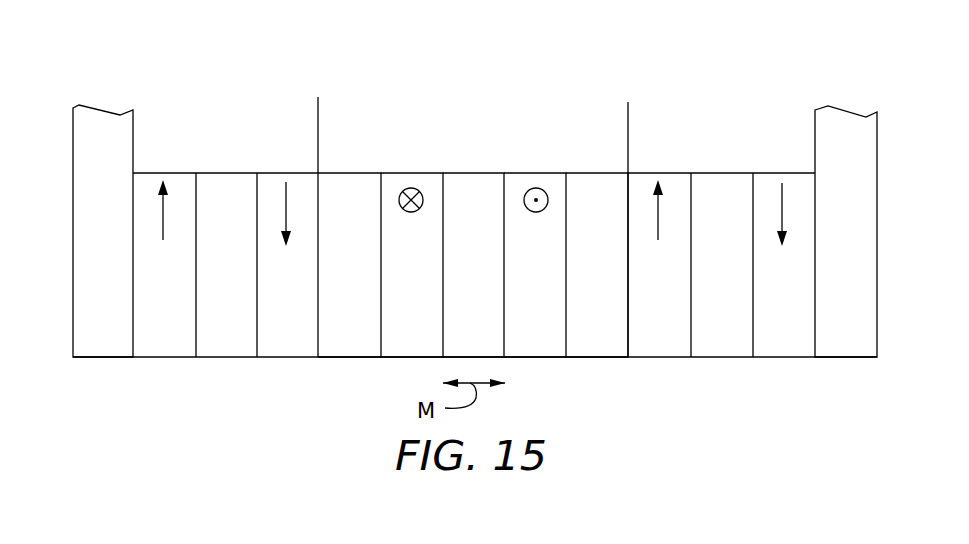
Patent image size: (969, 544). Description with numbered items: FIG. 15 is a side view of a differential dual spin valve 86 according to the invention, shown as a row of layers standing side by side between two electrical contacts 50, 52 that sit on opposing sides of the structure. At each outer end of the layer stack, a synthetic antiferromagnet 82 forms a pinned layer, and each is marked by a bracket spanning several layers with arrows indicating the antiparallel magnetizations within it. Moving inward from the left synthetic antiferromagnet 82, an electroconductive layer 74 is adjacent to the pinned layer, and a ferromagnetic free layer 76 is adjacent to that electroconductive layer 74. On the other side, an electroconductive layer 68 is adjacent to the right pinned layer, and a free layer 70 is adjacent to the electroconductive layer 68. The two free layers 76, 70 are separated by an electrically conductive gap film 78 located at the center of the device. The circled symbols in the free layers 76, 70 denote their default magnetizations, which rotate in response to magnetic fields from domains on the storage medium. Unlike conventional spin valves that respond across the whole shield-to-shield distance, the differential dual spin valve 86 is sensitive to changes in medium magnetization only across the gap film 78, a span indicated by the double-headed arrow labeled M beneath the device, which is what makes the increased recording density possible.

The electrical contact 50 is at (86, 284).
The electrical contact 52 is at (831, 286).
The electroconductive layer 68 is at (582, 285).
The free layer 70 is at (521, 285).
The electroconductive layer 74 is at (335, 285).
The ferromagnetic free layer 76 is at (397, 285).
The electrically conductive gap film 78 is at (459, 285).
The synthetic antiferromagnet 82 is at (133, 97).
The differential dual spin valve 86 is at (739, 390).